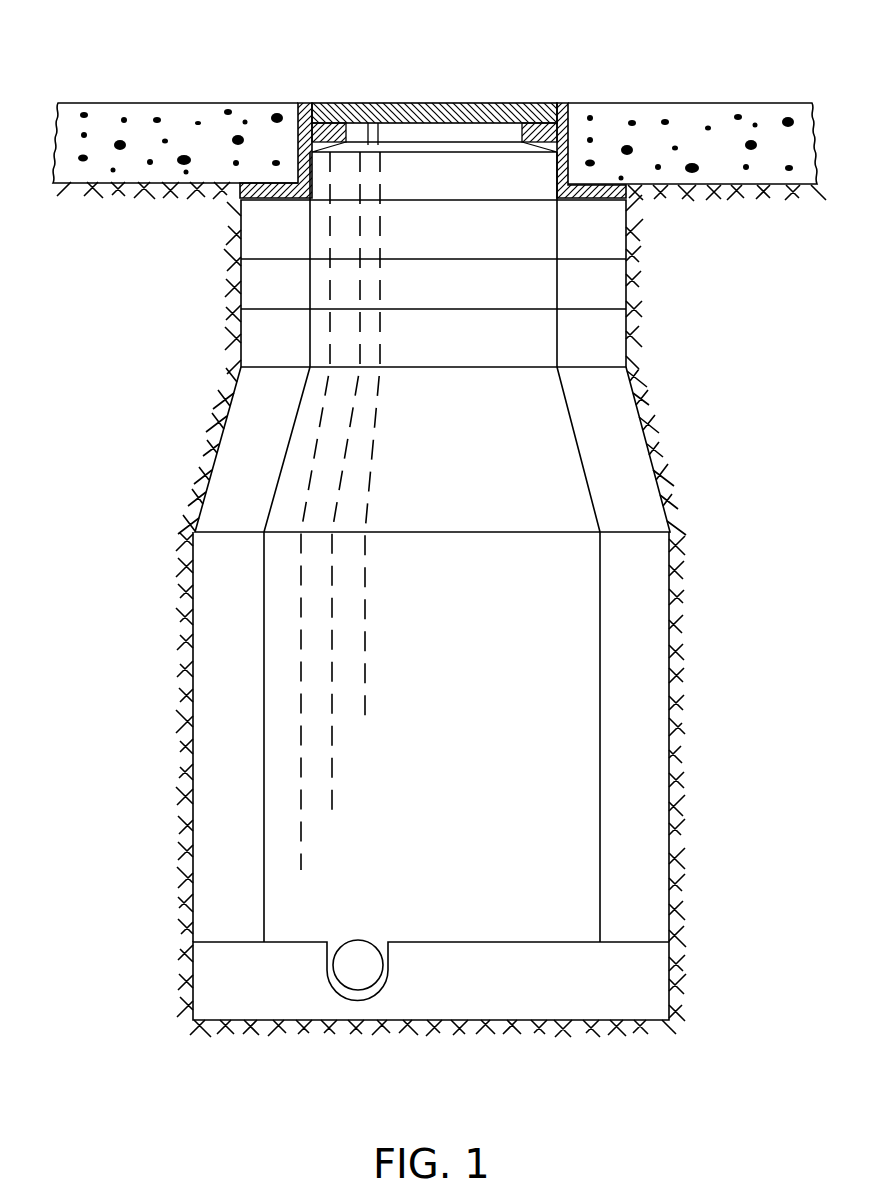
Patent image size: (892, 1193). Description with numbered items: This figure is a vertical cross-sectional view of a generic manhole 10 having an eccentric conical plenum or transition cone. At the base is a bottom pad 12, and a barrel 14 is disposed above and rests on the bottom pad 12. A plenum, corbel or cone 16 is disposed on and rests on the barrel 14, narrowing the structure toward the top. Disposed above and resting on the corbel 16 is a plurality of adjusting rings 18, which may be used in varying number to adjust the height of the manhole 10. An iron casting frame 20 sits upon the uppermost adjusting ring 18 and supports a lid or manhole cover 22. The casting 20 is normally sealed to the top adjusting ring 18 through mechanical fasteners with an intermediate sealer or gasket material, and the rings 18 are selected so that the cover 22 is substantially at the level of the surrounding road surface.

The manhole 10 is at (176, 56).
The bottom pad 12 is at (513, 996).
The barrel 14 is at (617, 830).
The cone 16 is at (597, 452).
The adjusting rings 18 is at (572, 237).
The iron casting frame 20 is at (539, 103).
The manhole cover 22 is at (449, 103).